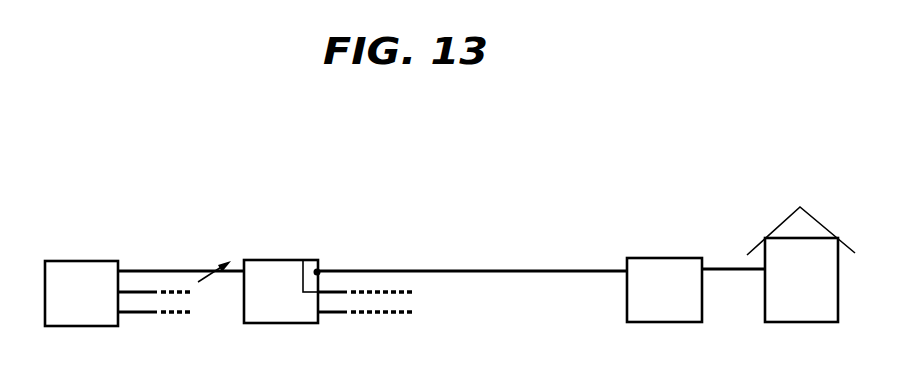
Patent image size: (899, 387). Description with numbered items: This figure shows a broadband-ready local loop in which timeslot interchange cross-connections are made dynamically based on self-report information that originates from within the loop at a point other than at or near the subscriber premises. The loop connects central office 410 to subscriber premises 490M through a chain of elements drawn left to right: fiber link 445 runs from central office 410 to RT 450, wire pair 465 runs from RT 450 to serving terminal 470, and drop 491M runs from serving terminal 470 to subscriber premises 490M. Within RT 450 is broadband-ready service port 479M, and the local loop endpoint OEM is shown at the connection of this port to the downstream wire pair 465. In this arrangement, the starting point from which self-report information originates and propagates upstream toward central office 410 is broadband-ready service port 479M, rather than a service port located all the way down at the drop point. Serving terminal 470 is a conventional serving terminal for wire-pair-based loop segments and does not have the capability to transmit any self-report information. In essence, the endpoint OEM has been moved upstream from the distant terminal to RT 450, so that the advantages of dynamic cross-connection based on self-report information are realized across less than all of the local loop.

The central office 410 is at (80, 260).
The fiber link 445 is at (163, 271).
The remote terminal 450 is at (272, 260).
The broadband-ready service port 479M is at (306, 260).
The local loop endpoint OEM is at (320, 271).
The wire pair 465 is at (427, 271).
The serving terminal 470 is at (668, 258).
The drop 491M is at (735, 268).
The subscriber premises 490M is at (793, 225).